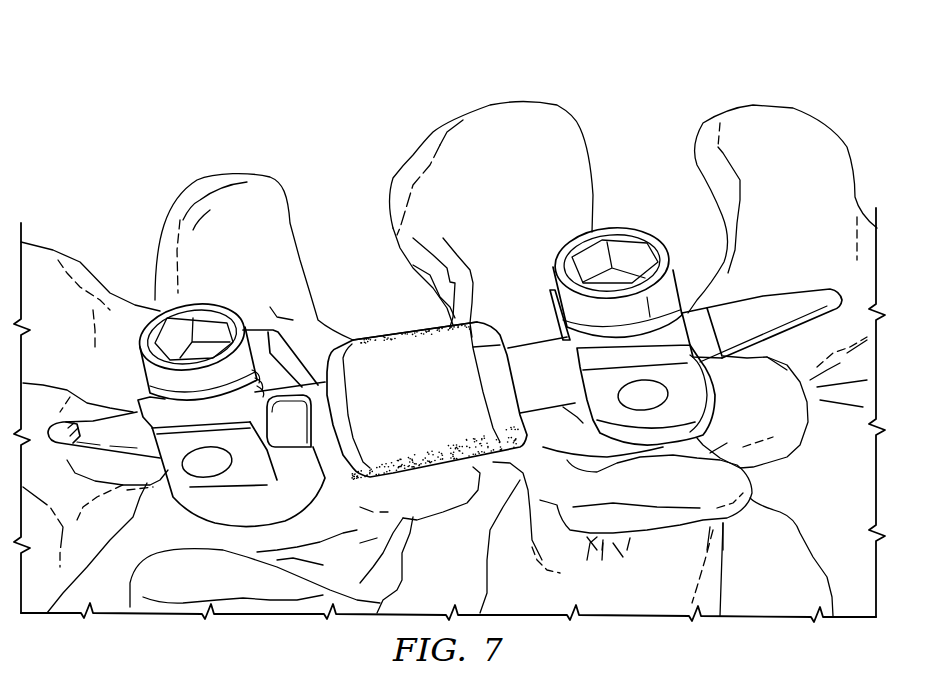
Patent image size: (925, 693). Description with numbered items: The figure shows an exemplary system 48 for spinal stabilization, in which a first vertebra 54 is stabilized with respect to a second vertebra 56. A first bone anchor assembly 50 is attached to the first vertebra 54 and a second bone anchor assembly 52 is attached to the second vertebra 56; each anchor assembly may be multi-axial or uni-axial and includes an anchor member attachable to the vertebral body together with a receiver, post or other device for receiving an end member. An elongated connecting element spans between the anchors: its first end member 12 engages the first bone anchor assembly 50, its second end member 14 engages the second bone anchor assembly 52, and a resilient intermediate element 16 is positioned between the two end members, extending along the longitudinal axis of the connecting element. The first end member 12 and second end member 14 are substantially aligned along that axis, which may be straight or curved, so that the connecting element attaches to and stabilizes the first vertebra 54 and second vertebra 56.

The system for stabilizing a first vertebra with respect to a second vertebra 48 is at (115, 195).
The first end member 12 is at (763, 293).
The second end member 14 is at (426, 383).
The resilient intermediate element 16 is at (397, 333).
The first bone anchor assembly 50 is at (718, 402).
The second bone anchor assembly 52 is at (190, 502).
The first vertebra 54 is at (713, 573).
The second vertebra 56 is at (392, 555).